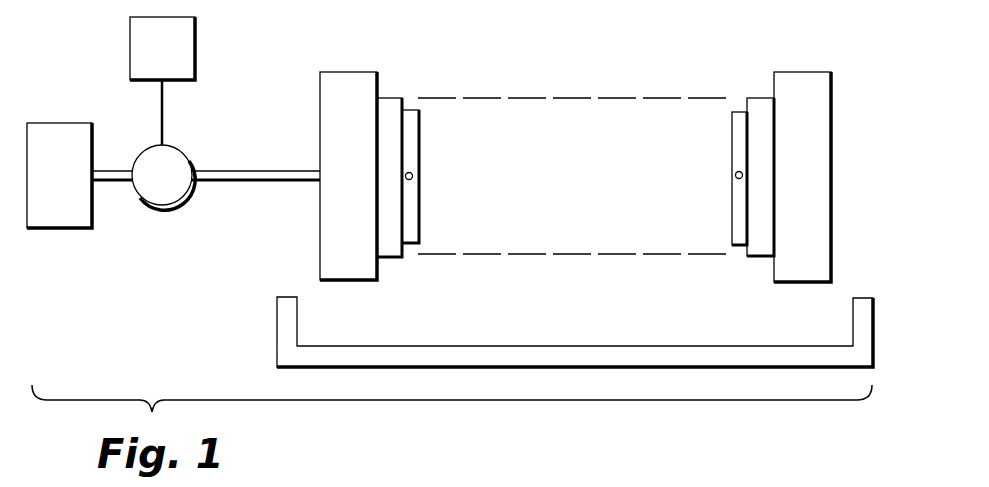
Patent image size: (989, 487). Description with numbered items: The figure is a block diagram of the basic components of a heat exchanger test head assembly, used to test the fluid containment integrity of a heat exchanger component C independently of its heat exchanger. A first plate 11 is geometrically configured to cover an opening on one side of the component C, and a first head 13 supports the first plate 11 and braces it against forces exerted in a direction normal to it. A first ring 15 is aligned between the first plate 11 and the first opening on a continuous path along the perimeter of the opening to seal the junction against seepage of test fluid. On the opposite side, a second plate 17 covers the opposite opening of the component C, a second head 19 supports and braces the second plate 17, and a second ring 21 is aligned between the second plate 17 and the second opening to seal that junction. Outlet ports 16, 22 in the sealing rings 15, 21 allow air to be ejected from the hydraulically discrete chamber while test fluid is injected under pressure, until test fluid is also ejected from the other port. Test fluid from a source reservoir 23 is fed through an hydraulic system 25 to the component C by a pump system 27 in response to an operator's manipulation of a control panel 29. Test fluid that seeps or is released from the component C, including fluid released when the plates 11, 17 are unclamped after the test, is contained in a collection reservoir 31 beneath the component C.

The first plate 11 is at (391, 257).
The first head 13 is at (350, 90).
The first ring 15 is at (410, 108).
The outlet port 16 is at (410, 179).
The second plate 17 is at (765, 258).
The second head 19 is at (808, 72).
The second ring 21 is at (740, 108).
The outlet port 22 is at (737, 180).
The source reservoir 23 is at (70, 135).
The hydraulic system 25 is at (212, 178).
The pump system 27 is at (170, 163).
The control panel 29 is at (180, 42).
The collection reservoir 31 is at (287, 318).
The heat exchanger component C is at (625, 97).